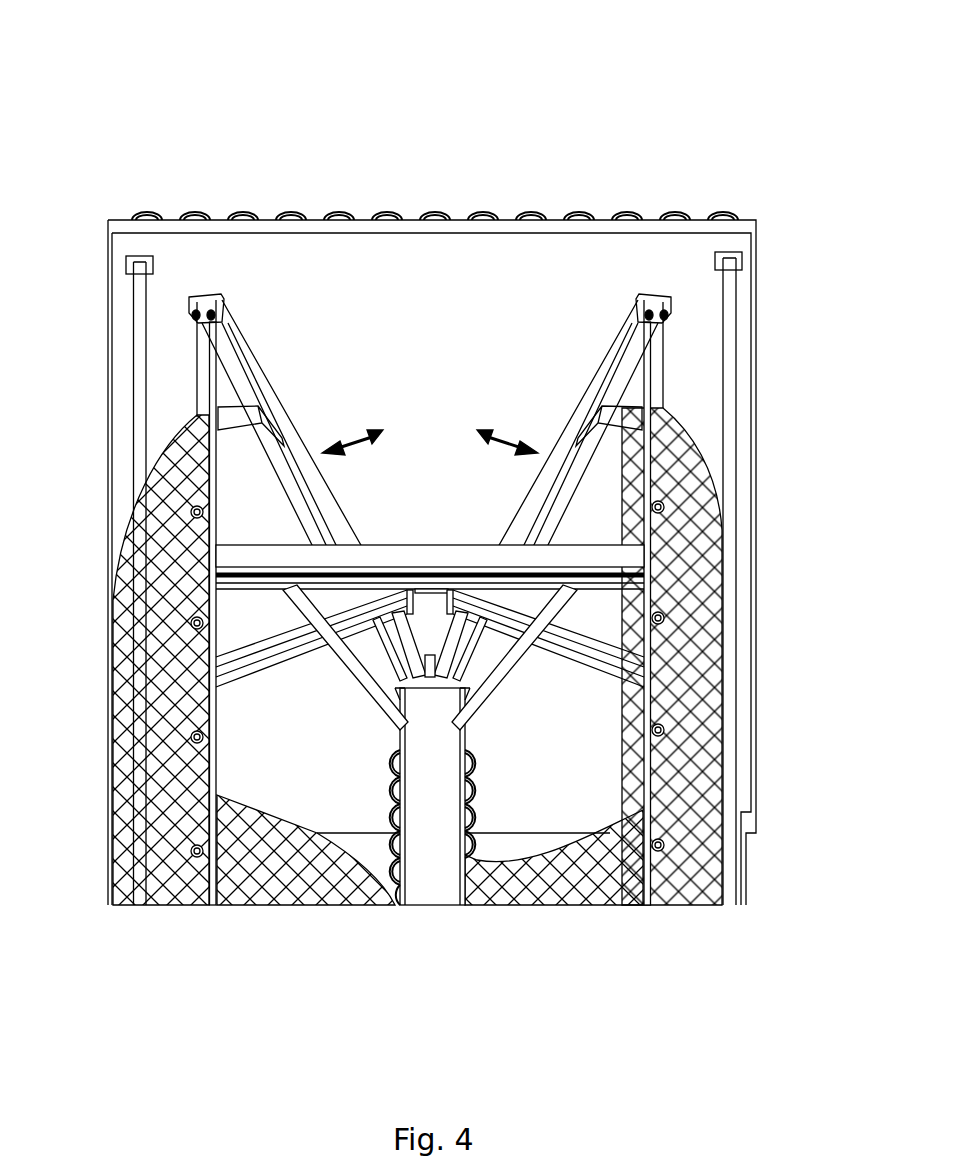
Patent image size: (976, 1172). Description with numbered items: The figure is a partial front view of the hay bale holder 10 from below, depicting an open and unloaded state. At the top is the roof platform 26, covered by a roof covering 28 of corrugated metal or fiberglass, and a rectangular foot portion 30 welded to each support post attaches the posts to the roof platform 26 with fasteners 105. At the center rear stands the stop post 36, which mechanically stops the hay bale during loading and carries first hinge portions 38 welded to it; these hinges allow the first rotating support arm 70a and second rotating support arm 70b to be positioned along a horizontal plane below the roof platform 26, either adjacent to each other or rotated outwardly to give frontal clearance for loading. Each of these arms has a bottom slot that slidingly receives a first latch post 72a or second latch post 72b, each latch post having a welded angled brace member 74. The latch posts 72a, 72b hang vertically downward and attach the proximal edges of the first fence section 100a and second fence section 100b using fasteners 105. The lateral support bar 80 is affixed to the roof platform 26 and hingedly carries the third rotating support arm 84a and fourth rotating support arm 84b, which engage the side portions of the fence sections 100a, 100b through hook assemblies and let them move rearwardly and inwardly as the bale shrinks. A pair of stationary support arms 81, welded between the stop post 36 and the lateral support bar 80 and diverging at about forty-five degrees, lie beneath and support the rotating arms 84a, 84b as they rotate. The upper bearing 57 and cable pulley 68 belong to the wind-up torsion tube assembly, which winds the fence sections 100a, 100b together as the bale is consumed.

The hay bale holder 10 is at (98, 145).
The roof platform 26 is at (680, 260).
The roof covering 28 is at (290, 216).
The rectangular foot portion 30 is at (135, 275).
The stop post 36 is at (433, 870).
The first hinge portion 38 is at (400, 688).
The upper bearing 57 is at (480, 777).
The cable pulley 68 is at (470, 807).
The first rotating support arm 70a is at (222, 298).
The second rotating support arm 70b is at (638, 297).
The first latch post 72a is at (213, 397).
The second latch post 72b is at (653, 378).
The angled brace member 74 is at (232, 418).
The lateral support bar 80 is at (453, 545).
The stationary support arm 81 is at (347, 667).
The third rotating support arm 84a is at (630, 628).
The fourth rotating support arm 84b is at (230, 628).
The first fence section 100a is at (160, 660).
The second fence section 100b is at (700, 572).
The fastener 105 is at (192, 851).